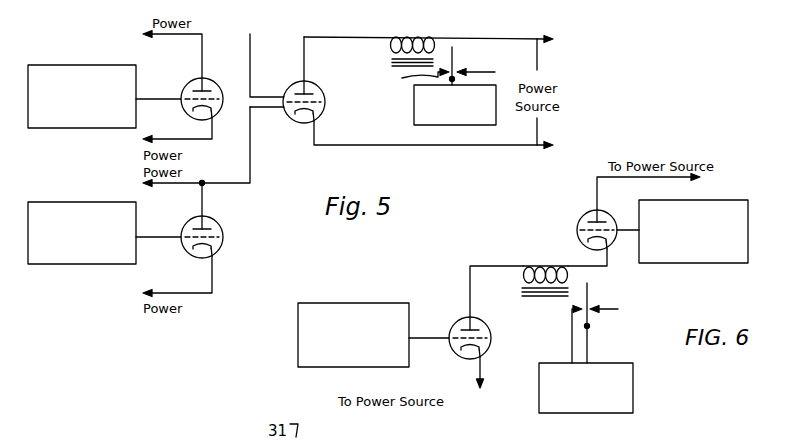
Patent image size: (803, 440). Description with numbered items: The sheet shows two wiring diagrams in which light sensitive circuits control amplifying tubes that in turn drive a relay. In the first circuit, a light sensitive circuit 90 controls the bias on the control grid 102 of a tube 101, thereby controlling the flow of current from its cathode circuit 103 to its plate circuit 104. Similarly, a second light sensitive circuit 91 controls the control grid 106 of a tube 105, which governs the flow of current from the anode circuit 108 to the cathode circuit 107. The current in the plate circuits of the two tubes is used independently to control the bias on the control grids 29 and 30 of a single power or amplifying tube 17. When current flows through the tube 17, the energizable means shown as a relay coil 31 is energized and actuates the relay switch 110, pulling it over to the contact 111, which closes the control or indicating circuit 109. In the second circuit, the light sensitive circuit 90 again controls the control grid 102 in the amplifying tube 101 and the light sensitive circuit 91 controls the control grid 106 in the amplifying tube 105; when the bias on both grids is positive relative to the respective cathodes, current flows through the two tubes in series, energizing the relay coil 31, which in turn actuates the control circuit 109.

In FIG. 5, the power or amplifying tube 17 is at (293, 84).
In FIG. 5, the control grid 29 is at (295, 113).
In FIG. 5, the control grid 30 is at (293, 94).
In FIG. 5, the relay coil 31 is at (424, 36).
In FIG. 6, the relay coil 31 is at (553, 266).
In FIG. 5, the light sensitive circuit 90 is at (91, 65).
In FIG. 6, the light sensitive circuit 90 is at (392, 303).
In FIG. 5, the light sensitive circuit 91 is at (114, 202).
In FIG. 6, the light sensitive circuit 91 is at (728, 263).
In FIG. 5, the tube 101 is at (208, 80).
In FIG. 6, the tube 101 is at (460, 321).
In FIG. 5, the control grid 102 is at (184, 90).
In FIG. 6, the control grid 102 is at (452, 350).
In FIG. 5, the cathode circuit 103 is at (212, 134).
In FIG. 6, the cathode circuit 103 is at (481, 357).
In FIG. 5, the plate circuit 104 is at (203, 45).
In FIG. 6, the plate circuit 104 is at (471, 291).
In FIG. 5, the tube 105 is at (222, 227).
In FIG. 6, the tube 105 is at (630, 201).
In FIG. 5, the control grid 106 is at (220, 243).
In FIG. 6, the control grid 106 is at (578, 228).
In FIG. 5, the cathode circuit 107 is at (212, 270).
In FIG. 6, the cathode circuit 107 is at (608, 262).
In FIG. 5, the anode circuit 108 is at (203, 196).
In FIG. 6, the anode circuit 108 is at (596, 198).
In FIG. 5, the control or indicating circuit 109 is at (424, 126).
In FIG. 6, the control or indicating circuit 109 is at (633, 385).
In FIG. 5, the relay switch 110 is at (455, 78).
In FIG. 6, the relay switch 110 is at (590, 326).
In FIG. 5, the contact 111 is at (439, 77).
In FIG. 6, the contact 111 is at (595, 335).